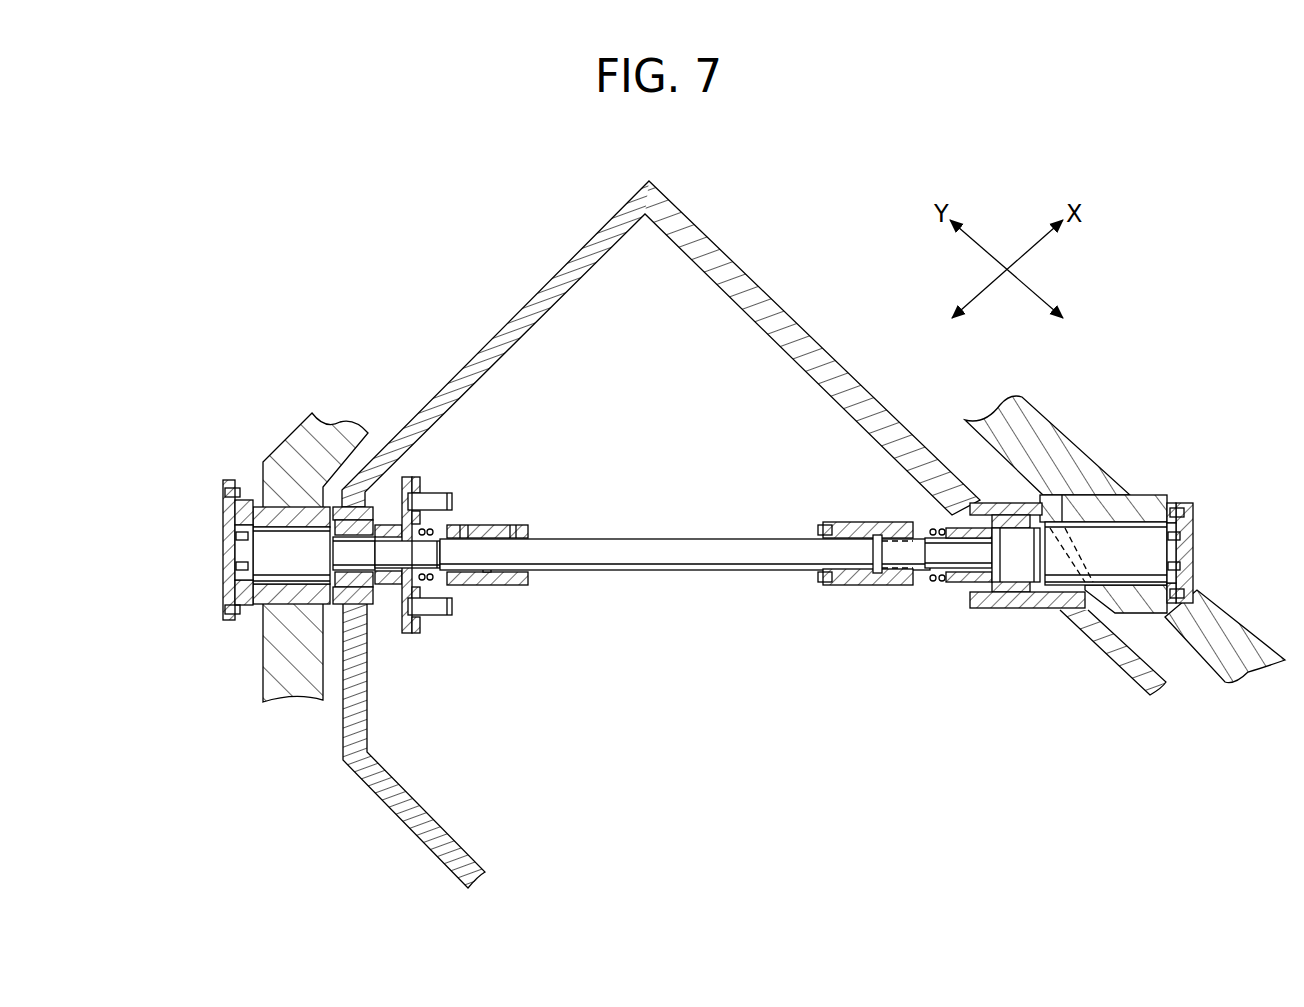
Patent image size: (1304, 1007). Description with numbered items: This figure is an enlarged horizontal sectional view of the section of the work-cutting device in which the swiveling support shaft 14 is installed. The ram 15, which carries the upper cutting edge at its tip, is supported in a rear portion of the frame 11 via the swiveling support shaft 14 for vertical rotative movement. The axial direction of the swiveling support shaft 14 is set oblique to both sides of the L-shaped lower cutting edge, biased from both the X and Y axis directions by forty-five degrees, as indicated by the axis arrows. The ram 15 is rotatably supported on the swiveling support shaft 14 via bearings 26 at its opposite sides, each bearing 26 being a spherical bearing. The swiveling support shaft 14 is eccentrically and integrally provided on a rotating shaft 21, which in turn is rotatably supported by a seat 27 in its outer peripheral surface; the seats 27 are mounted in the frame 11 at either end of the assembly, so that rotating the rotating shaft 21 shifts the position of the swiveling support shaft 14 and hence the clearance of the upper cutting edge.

The frame 11 is at (300, 438).
The swiveling support shaft 14 is at (636, 545).
The ram 15 is at (476, 360).
The rotating shaft 21 is at (300, 567).
The bearing 26 is at (368, 607).
The seat 27 is at (1134, 513).